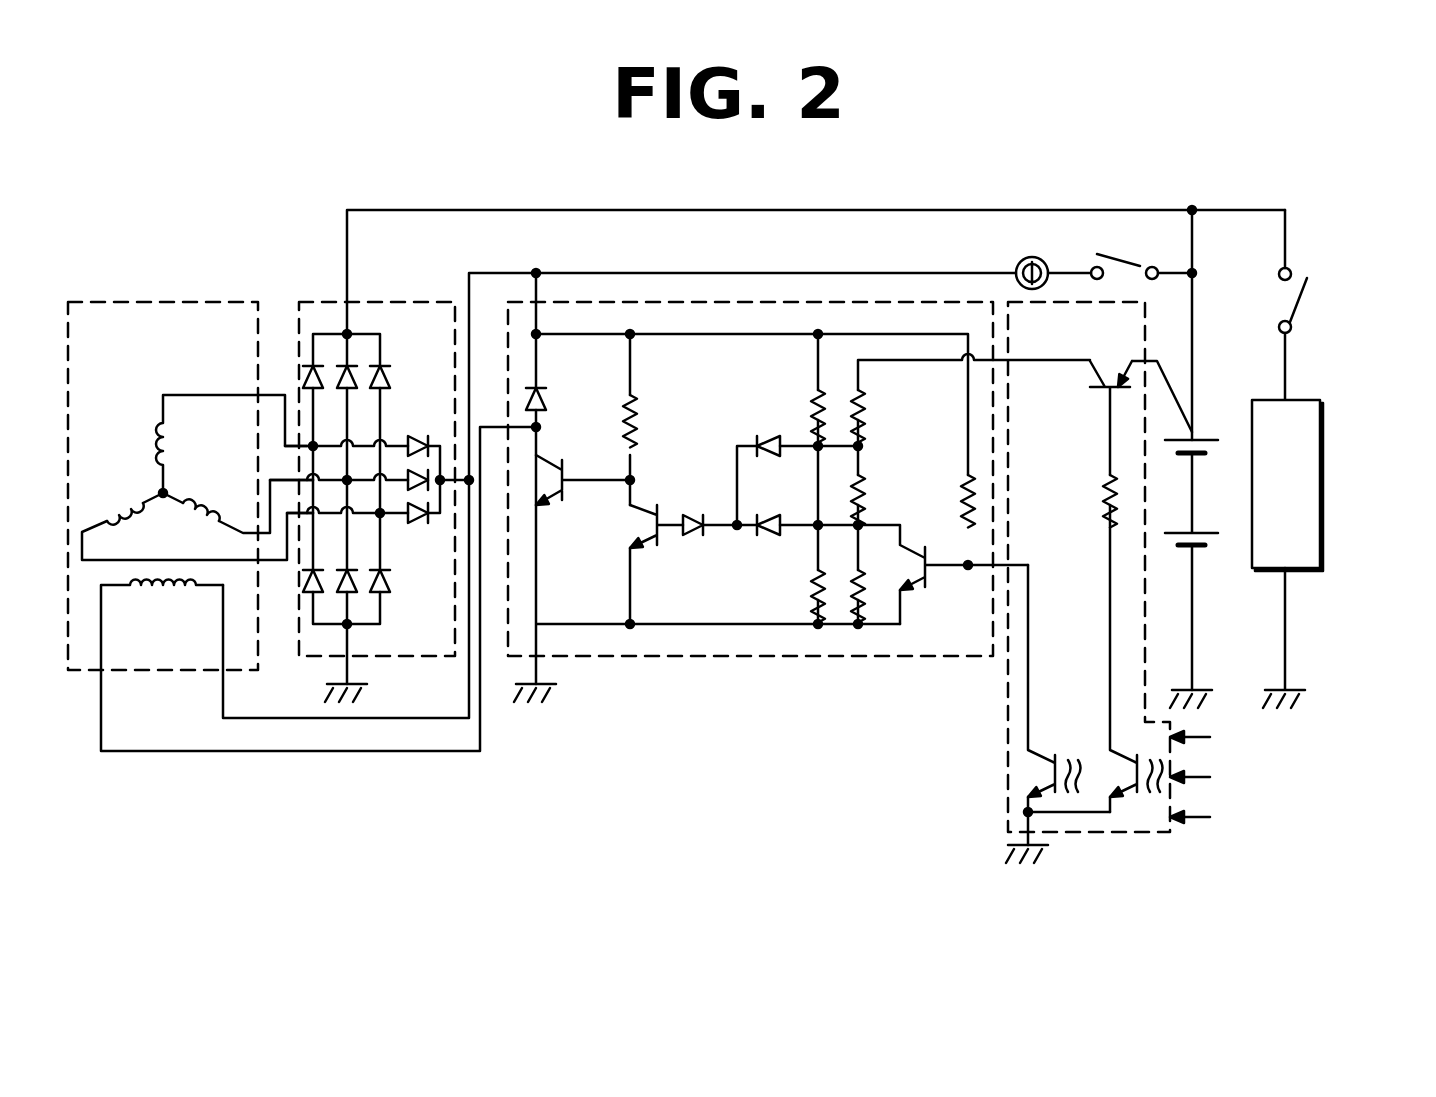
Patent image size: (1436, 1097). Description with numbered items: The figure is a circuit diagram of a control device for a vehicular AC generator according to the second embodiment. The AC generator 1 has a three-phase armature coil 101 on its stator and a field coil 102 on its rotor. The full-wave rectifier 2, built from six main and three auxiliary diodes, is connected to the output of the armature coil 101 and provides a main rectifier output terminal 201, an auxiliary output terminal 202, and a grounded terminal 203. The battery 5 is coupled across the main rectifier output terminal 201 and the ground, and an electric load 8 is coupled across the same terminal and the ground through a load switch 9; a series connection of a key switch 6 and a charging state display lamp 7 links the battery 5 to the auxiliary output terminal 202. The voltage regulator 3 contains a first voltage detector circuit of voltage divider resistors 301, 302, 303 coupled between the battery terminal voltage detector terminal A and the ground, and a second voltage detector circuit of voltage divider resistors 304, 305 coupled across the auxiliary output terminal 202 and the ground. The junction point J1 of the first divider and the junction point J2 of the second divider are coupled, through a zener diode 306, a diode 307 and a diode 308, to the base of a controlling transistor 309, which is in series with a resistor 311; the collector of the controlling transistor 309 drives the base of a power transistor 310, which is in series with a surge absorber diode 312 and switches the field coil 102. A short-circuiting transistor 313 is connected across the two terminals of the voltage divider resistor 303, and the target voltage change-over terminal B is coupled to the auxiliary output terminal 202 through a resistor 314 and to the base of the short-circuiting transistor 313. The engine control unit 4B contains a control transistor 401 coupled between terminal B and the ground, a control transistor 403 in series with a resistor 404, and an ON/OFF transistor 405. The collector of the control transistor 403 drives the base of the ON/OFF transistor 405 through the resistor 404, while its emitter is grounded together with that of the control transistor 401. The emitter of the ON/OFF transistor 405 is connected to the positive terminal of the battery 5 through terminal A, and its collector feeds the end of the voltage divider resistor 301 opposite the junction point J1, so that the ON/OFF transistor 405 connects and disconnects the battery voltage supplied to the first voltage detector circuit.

The AC generator 1 is at (172, 300).
The full-wave rectifier 2 is at (385, 302).
The voltage regulator 3 is at (683, 656).
The engine control unit 4B is at (1008, 782).
The battery 5 is at (1203, 490).
The key switch 6 is at (1138, 268).
The charging state display lamp 7 is at (1018, 260).
The electric load 8 is at (1322, 492).
The load switch 9 is at (1302, 300).
The three-phase armature coil 101 is at (148, 440).
The field coil 102 is at (168, 592).
The main rectifier output terminal 201 is at (352, 334).
The auxiliary output terminal 202 is at (440, 495).
The grounded terminal 203 is at (352, 624).
The voltage divider resistor 301 is at (870, 405).
The voltage divider resistor 302 is at (956, 490).
The voltage divider resistor 303 is at (872, 585).
The voltage divider resistor 304 is at (808, 405).
The voltage divider resistor 305 is at (810, 582).
The zener diode 306 is at (694, 510).
The diode 307 is at (760, 440).
The diode 308 is at (770, 518).
The controlling transistor 309 is at (650, 555).
The power transistor 310 is at (542, 505).
The resistor 311 is at (640, 425).
The surge absorber diode 312 is at (548, 398).
The short-circuiting transistor 313 is at (912, 582).
The resistor 314 is at (868, 488).
The control transistor 401 is at (1058, 752).
The control transistor 403 is at (1140, 800).
The resistor 404 is at (1102, 488).
The ON/OFF transistor 405 is at (1114, 392).
The battery terminal voltage detector terminal A is at (1157, 360).
The target voltage change-over terminal B is at (992, 565).
The junction point J1 is at (860, 446).
The junction point J2 is at (815, 532).